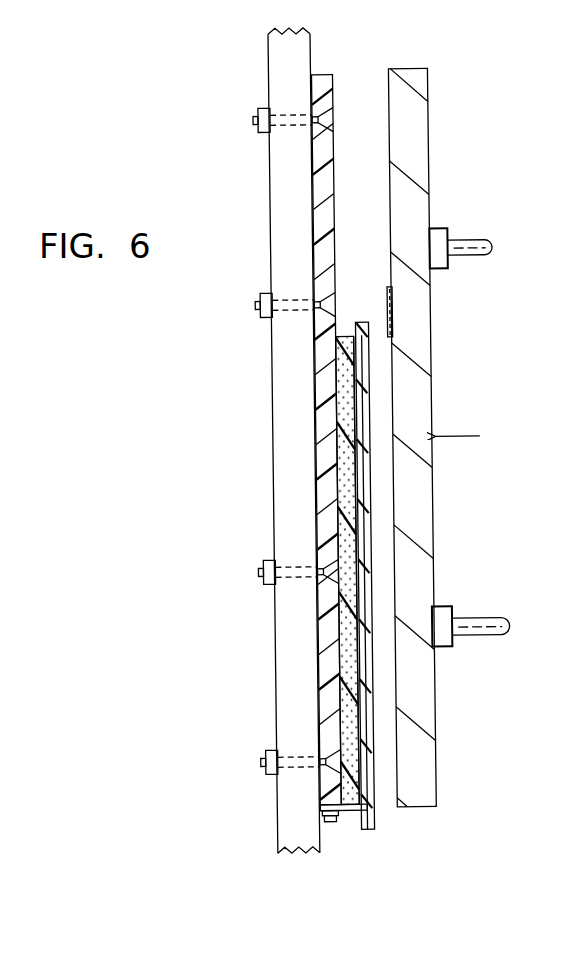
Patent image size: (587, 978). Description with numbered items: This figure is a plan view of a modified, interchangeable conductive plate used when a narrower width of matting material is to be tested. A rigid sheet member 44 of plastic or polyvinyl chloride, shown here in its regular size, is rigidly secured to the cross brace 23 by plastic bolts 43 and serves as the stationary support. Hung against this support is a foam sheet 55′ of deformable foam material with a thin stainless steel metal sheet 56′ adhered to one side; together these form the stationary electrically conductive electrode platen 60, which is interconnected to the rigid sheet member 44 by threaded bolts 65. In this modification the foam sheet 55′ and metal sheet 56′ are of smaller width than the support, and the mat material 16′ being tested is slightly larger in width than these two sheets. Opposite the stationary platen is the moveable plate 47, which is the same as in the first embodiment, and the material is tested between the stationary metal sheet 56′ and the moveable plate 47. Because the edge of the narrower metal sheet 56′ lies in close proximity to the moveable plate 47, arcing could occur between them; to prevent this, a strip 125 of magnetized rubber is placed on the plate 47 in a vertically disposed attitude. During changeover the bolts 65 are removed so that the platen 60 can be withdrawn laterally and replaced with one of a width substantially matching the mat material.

The cross brace 23 is at (292, 663).
The plastic bolt 43 is at (261, 117).
The rigid sheet member 44 is at (333, 192).
The moveable plate 47 is at (419, 321).
The mat material 16′ is at (371, 405).
The foam sheet 55′ is at (340, 473).
The metal sheet 56′ is at (352, 503).
The electrode platen 60 is at (368, 532).
The threaded bolt 65 is at (331, 822).
The strip of magnetized rubber 125 is at (389, 296).